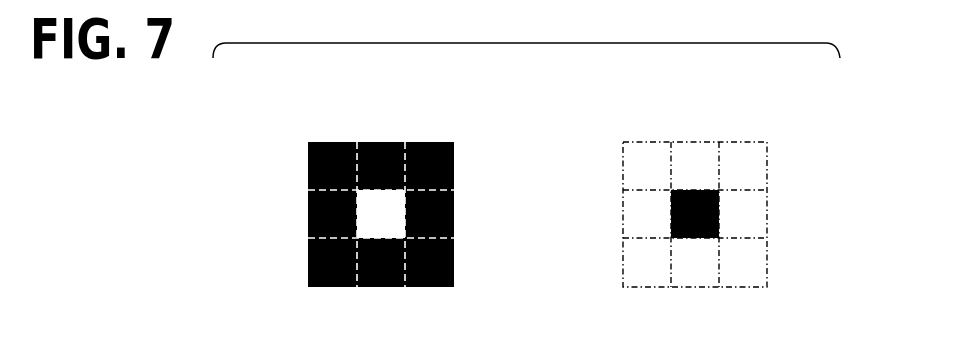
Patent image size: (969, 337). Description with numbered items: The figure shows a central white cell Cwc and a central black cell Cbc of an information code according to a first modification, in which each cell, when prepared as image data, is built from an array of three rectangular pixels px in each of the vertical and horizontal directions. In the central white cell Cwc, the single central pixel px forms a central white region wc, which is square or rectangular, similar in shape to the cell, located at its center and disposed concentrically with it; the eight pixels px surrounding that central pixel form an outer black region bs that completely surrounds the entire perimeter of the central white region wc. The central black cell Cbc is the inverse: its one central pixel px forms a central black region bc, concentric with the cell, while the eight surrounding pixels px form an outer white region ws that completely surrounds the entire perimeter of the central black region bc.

The central white cell Cwc is at (367, 205).
The central black cell Cbc is at (680, 205).
The pixel px is at (417, 151).
The central white region wc is at (401, 210).
The outer black region bs is at (455, 272).
The central black region bc is at (719, 214).
The outer white region ws is at (764, 272).